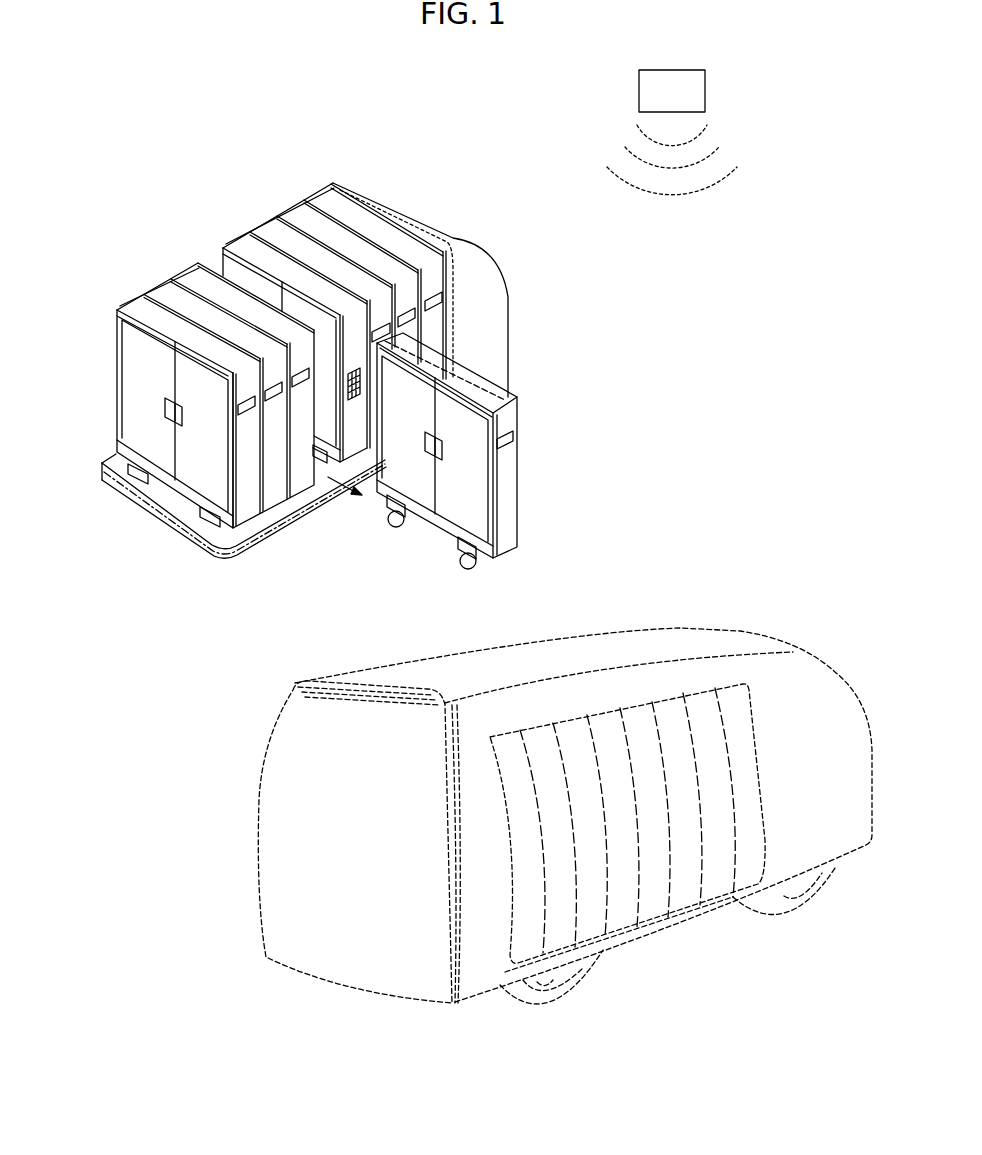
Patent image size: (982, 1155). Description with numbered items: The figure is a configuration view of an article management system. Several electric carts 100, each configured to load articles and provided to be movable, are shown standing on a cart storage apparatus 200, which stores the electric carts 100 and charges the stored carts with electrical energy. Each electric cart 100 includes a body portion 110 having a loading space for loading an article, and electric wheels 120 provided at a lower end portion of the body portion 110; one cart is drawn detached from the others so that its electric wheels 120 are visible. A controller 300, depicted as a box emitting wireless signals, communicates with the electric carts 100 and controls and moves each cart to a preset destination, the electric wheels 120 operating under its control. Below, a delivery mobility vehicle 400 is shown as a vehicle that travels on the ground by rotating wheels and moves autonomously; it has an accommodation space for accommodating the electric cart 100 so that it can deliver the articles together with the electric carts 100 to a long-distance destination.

The electric cart 100 is at (524, 408).
The body portion 110 is at (511, 485).
The electric wheels 120 is at (465, 562).
The cart storage apparatus 200 is at (166, 522).
The controller 300 is at (706, 90).
The delivery mobility vehicle 400 is at (254, 770).